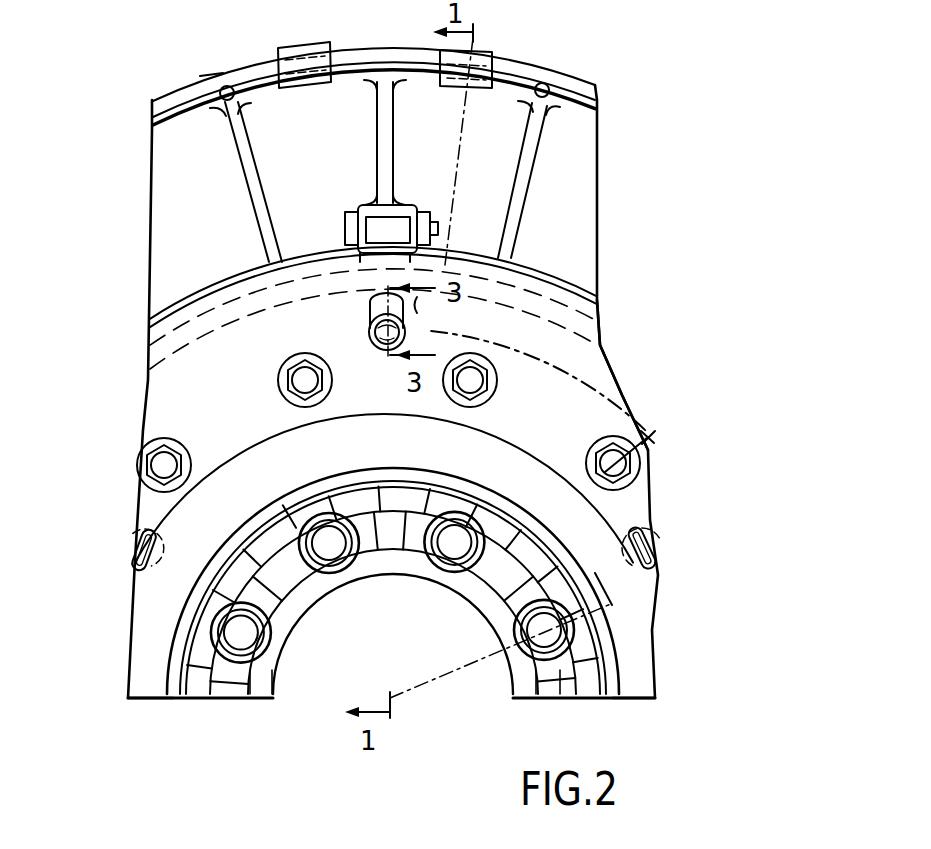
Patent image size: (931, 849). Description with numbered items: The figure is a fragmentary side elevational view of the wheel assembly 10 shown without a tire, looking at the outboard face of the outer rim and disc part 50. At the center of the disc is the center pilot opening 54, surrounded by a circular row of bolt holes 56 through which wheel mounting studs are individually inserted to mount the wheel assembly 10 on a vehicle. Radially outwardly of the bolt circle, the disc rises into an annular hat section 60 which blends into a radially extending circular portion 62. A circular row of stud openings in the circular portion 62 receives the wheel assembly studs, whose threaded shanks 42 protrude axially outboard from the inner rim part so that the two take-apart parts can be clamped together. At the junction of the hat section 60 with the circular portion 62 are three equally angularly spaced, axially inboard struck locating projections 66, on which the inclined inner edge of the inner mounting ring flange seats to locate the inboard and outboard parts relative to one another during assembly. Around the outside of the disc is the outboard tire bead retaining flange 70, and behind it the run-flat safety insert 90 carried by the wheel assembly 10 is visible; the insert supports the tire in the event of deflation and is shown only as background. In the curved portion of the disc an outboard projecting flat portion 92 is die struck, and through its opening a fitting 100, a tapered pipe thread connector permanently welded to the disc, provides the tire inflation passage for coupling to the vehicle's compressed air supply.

The wheel assembly 10 is at (92, 298).
The threaded shank 42 is at (180, 457).
The outer rim and disc part 50 is at (120, 622).
The center pilot opening 54 is at (274, 678).
The bolt holes 56 is at (250, 630).
The annular hat section 60 is at (517, 453).
The radially extending circular portion 62 is at (554, 398).
The locating projections 66 is at (134, 545).
The outboard tire bead retaining flange 70 is at (197, 290).
The run-flat safety insert 90 is at (140, 184).
The outboard projecting flat portion 92 is at (364, 319).
The fitting 100 is at (412, 336).